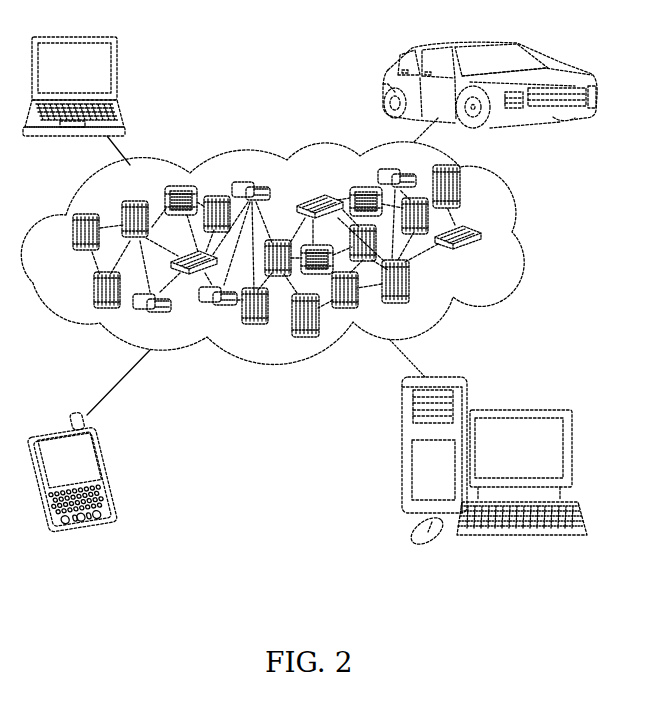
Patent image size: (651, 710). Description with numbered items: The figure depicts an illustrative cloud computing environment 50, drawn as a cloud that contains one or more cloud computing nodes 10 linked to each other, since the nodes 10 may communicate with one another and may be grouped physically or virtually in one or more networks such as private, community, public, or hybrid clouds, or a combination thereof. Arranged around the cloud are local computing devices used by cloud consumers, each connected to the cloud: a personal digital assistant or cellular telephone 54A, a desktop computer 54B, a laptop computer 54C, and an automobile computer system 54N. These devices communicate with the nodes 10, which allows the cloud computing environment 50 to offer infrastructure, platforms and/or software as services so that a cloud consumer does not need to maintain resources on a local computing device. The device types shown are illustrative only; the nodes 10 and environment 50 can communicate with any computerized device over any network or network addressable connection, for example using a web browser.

The cloud computing nodes 10 is at (489, 257).
The cloud computing environment 50 is at (520, 237).
The personal digital assistant or cellular telephone 54A is at (112, 469).
The desktop computer 54B is at (516, 409).
The laptop computer 54C is at (118, 72).
The automobile computer system 54N is at (383, 82).